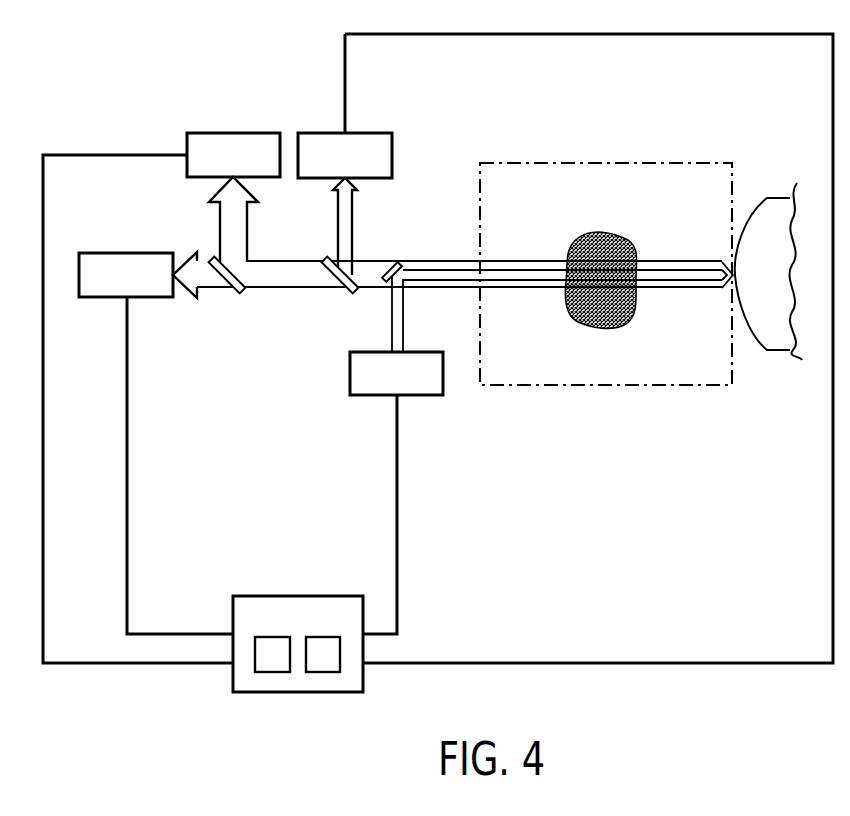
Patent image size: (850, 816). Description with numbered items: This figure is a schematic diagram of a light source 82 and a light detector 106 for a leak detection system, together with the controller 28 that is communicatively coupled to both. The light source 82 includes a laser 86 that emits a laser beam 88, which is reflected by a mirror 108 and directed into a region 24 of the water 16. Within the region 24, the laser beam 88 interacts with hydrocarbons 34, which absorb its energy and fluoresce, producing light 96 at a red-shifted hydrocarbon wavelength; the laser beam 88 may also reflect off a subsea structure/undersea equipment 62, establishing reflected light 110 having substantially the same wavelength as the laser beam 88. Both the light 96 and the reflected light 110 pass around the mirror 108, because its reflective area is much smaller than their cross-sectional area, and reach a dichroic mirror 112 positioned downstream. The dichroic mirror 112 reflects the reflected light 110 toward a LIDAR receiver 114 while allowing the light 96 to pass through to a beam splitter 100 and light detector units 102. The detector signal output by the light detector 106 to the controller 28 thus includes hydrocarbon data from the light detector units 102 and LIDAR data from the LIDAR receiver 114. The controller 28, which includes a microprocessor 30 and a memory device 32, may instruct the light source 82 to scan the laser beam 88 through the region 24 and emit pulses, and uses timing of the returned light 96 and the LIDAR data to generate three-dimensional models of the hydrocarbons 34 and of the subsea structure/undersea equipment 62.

The water 16 is at (663, 358).
The region 24 is at (686, 191).
The controller 28 is at (298, 647).
The microprocessor 30 is at (272, 672).
The memory device 32 is at (325, 672).
The hydrocarbons 34 is at (597, 234).
The subsea structure/undersea equipment 62 is at (787, 198).
The light source 82 is at (462, 390).
The laser 86 is at (350, 372).
The laser beam 88 is at (397, 317).
The light from fluorescing hydrocarbons 96 is at (270, 277).
The beam splitter 100 is at (242, 292).
The light detector unit 102 is at (215, 133).
The light detector 106 is at (199, 108).
The mirror 108 is at (388, 263).
The reflected light 110 is at (343, 212).
The dichroic mirror 112 is at (355, 297).
The LIDAR receiver 114 is at (318, 133).